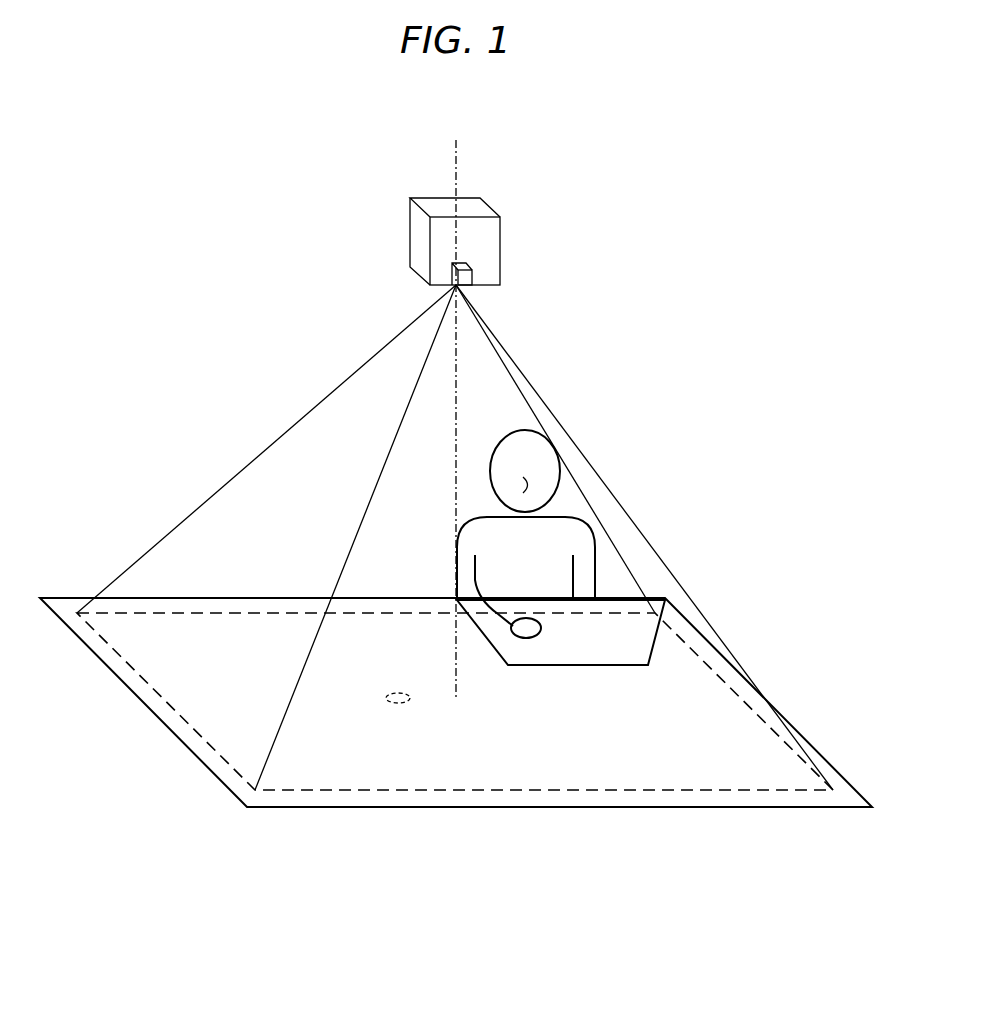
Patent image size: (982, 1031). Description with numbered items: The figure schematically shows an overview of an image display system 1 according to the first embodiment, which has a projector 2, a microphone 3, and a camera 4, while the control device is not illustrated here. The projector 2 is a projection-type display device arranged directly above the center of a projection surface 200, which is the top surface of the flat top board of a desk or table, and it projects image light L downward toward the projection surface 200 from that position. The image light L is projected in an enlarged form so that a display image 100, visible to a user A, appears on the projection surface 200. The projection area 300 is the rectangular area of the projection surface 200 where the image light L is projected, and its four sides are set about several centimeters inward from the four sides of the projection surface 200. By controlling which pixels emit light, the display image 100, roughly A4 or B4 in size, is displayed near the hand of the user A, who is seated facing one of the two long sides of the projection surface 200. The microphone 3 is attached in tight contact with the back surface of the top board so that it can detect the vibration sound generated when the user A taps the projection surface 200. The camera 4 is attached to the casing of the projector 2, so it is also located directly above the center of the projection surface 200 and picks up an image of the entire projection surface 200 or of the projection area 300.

The image display system 1 is at (296, 218).
The projector 2 is at (493, 208).
The camera 4 is at (472, 273).
The image light L is at (313, 407).
The user A is at (523, 430).
The display image 100 is at (592, 628).
The projection surface 200 is at (697, 720).
The projection area 300 is at (743, 790).
The microphone 3 is at (386, 697).